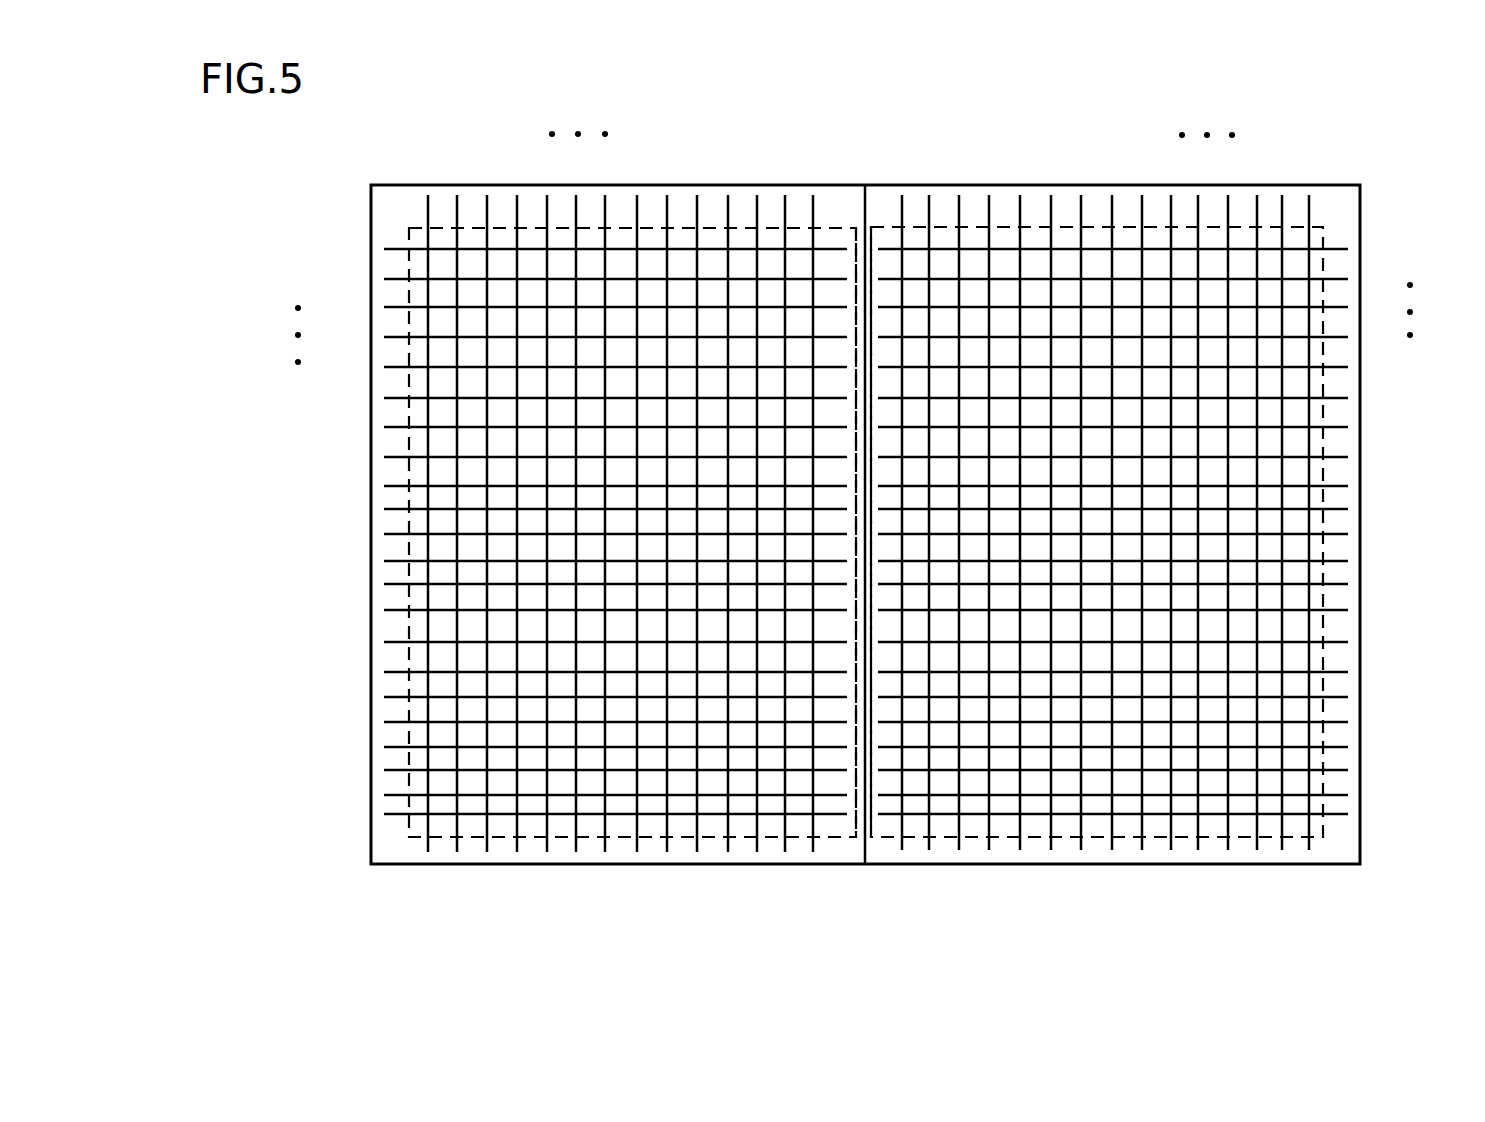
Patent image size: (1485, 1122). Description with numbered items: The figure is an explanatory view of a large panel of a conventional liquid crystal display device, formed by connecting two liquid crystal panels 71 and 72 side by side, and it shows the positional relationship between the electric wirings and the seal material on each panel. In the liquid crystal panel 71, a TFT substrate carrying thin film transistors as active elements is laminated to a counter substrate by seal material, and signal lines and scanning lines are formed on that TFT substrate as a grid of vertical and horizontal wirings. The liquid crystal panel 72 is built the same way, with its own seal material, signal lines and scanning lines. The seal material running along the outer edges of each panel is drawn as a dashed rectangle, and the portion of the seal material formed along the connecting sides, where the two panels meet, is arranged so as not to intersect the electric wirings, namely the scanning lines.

The liquid crystal panel 71 is at (360, 448).
The liquid crystal panel 72 is at (1365, 478).